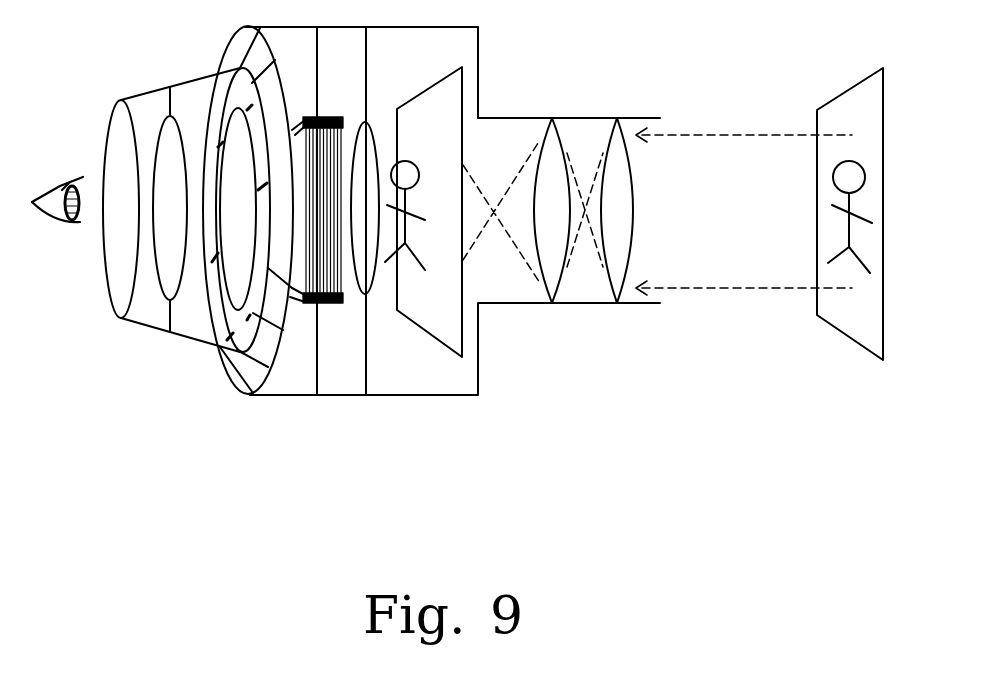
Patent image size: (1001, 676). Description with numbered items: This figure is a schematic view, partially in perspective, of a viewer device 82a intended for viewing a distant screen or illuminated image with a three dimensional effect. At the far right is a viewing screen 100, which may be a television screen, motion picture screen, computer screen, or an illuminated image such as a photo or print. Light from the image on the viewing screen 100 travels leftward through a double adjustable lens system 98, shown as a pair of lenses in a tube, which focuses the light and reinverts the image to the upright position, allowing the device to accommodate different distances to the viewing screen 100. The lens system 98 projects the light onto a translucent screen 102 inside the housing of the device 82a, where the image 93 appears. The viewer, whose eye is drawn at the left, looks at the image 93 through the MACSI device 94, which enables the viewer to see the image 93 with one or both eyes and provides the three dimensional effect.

The viewer device 82a is at (368, 434).
The image 93 is at (415, 157).
The MACSI device 94 is at (298, 300).
The double adjustable lens system 98 is at (582, 334).
The viewing screen 100 is at (842, 322).
The translucent screen 102 is at (440, 332).